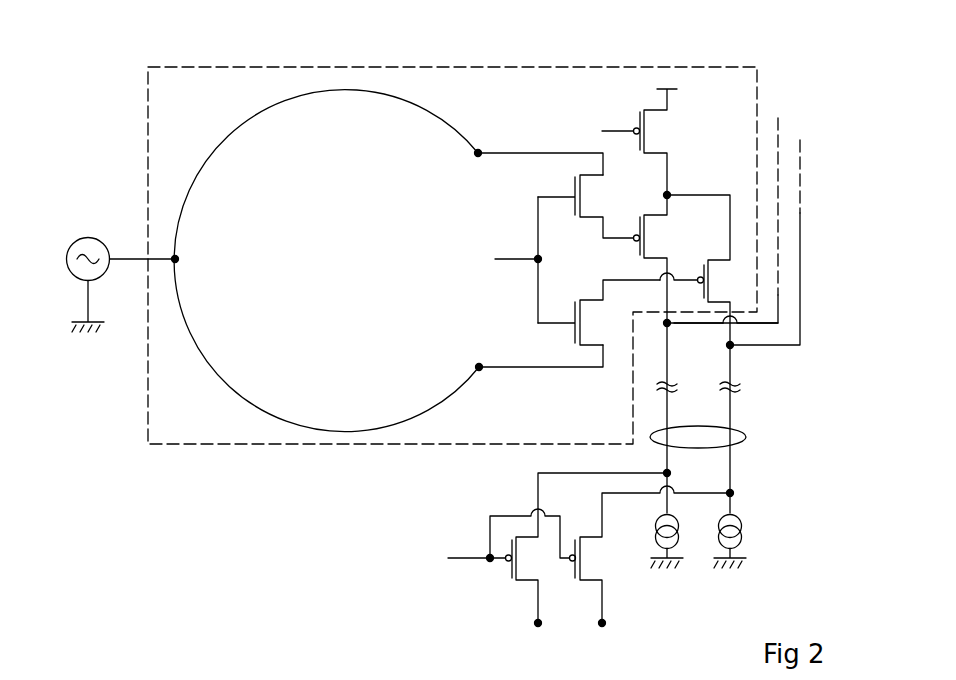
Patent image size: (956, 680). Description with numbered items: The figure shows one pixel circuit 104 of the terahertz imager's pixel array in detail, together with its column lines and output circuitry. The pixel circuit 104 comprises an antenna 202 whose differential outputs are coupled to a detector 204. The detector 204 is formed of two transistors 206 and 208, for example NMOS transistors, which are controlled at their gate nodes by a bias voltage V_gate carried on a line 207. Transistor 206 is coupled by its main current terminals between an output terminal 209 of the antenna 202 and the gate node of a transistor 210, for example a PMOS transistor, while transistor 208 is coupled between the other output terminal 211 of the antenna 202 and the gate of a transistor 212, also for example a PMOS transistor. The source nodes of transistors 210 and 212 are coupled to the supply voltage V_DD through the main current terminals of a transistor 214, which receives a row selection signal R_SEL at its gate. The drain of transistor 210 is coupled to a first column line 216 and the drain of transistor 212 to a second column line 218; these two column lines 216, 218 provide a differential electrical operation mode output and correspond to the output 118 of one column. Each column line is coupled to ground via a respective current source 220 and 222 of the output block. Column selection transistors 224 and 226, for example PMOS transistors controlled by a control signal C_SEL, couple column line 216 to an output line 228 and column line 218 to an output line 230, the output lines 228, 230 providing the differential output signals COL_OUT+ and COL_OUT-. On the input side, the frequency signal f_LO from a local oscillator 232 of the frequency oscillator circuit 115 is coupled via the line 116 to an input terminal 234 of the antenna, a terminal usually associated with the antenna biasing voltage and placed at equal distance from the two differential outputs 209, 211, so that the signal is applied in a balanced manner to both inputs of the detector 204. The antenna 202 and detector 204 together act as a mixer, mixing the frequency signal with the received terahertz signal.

The pixel circuit 104 is at (360, 67).
The frequency oscillator circuit 115 is at (86, 152).
The line 116 is at (130, 259).
The output 118 is at (748, 438).
The antenna 202 is at (444, 114).
The detector 204 is at (566, 134).
The transistor 206 is at (596, 220).
The line 207 is at (536, 259).
The transistor 208 is at (598, 296).
The output terminal 209 is at (481, 151).
The transistor 210 is at (656, 234).
The output terminal 211 is at (478, 366).
The transistor 212 is at (716, 258).
The transistor 214 is at (657, 131).
The first column line 216 is at (667, 353).
The second column line 218 is at (732, 365).
The current source 220 is at (676, 526).
The current source 222 is at (742, 528).
The column selection transistor 224 is at (533, 578).
The column selection transistor 226 is at (598, 578).
The output line 228 is at (535, 623).
The output line 230 is at (605, 623).
The local oscillator 232 is at (74, 243).
The input terminal 234 is at (178, 259).